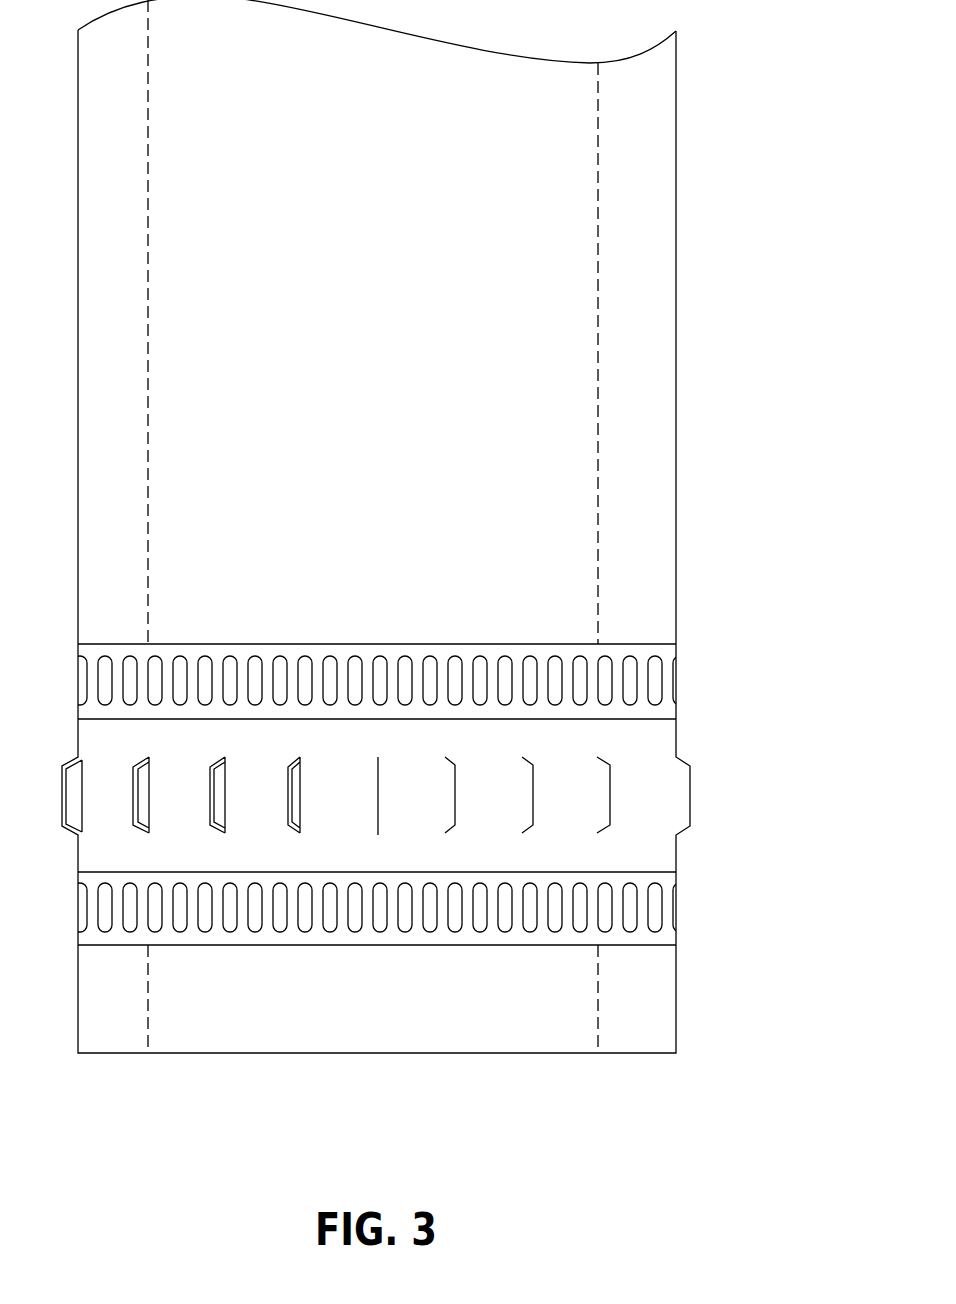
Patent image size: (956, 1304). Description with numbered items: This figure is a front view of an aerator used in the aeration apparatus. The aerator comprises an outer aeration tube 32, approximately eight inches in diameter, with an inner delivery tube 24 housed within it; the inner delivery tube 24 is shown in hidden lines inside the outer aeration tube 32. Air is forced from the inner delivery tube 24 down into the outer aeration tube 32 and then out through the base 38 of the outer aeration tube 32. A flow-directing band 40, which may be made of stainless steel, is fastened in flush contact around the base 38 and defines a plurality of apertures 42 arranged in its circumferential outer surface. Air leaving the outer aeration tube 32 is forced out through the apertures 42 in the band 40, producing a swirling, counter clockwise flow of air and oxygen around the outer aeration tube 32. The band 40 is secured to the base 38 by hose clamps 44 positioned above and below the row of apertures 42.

The inner delivery tube 24 is at (598, 232).
The outer aeration tube 32 is at (650, 416).
The base 38 is at (655, 1001).
The flow-directing band 40 is at (657, 746).
The apertures 42 is at (297, 808).
The hose clamps 44 is at (655, 656).